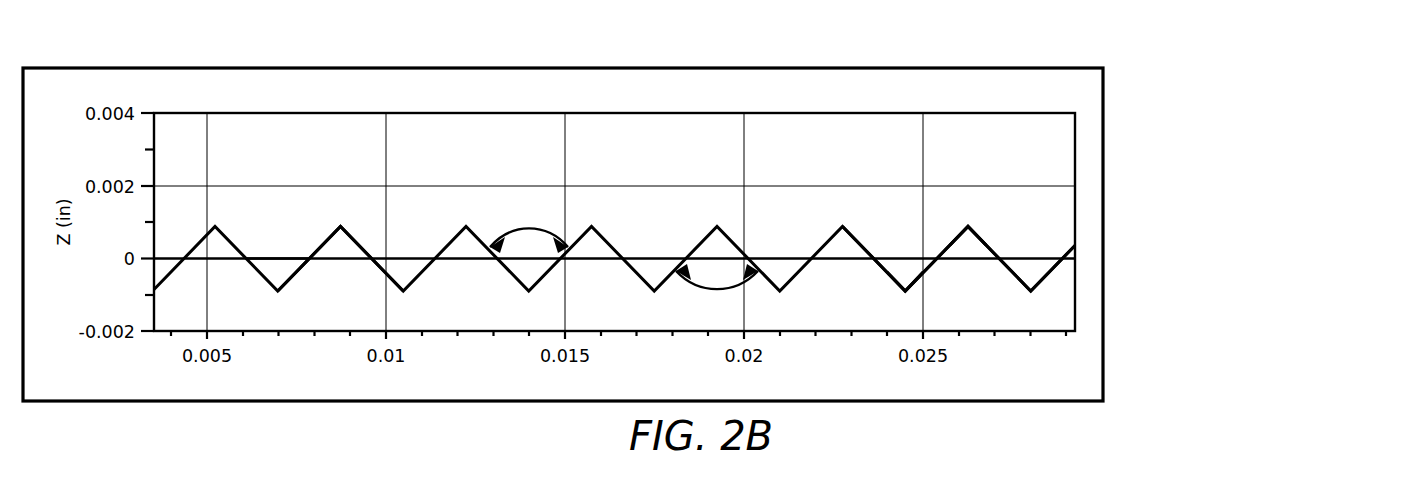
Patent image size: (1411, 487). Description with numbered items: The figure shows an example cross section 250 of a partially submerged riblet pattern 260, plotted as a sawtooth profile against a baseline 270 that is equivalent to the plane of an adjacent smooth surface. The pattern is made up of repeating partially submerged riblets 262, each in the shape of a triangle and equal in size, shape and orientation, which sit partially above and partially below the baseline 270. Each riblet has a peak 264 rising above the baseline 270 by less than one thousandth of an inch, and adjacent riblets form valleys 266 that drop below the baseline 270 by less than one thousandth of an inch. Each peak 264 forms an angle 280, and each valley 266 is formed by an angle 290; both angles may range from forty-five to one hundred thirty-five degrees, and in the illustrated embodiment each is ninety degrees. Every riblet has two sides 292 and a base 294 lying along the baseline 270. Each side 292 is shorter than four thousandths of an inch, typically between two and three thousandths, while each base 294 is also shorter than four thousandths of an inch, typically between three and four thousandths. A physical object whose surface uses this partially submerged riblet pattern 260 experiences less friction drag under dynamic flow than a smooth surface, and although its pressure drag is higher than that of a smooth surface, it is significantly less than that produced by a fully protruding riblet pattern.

The cross section 250 is at (1147, 30).
The partially submerged riblet pattern 260 is at (1052, 272).
The partially submerged riblets 262 is at (995, 273).
The peak 264 is at (968, 227).
The valley 266 is at (968, 320).
The baseline 270 is at (887, 257).
The angle 280 is at (535, 227).
The angle 290 is at (716, 289).
The sides 292 is at (320, 248).
The base 294 is at (279, 257).